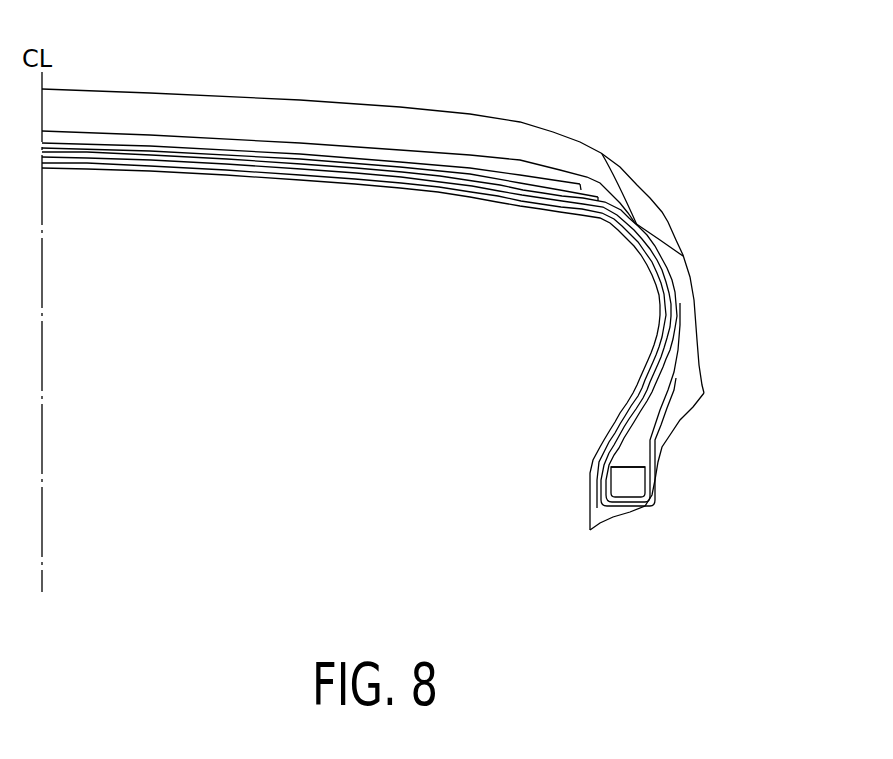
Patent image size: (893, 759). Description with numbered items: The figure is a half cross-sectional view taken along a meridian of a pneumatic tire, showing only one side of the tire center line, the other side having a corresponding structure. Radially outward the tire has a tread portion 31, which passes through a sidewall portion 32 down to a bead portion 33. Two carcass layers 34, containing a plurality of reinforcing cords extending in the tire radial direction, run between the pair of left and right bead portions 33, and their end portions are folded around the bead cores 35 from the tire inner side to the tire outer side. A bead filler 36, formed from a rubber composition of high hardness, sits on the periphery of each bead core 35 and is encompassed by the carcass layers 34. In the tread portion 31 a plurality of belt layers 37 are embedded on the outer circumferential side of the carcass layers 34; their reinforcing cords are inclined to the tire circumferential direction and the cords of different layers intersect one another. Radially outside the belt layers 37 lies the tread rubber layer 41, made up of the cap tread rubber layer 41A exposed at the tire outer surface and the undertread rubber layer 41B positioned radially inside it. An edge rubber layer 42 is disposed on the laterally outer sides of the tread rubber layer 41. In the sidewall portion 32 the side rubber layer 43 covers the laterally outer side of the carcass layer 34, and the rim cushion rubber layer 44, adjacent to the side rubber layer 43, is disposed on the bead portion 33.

The tread portion 31 is at (453, 108).
The tread rubber layer 41 is at (338, 121).
The cap tread rubber layer 41A is at (187, 108).
The undertread rubber layer 41B is at (233, 142).
The belt layers 37 is at (565, 188).
The edge rubber layer 42 is at (644, 216).
The carcass layers 34 is at (673, 292).
The sidewall portion 32 is at (702, 340).
The side rubber layer 43 is at (689, 391).
The bead filler 36 is at (623, 452).
The bead core 35 is at (618, 487).
The rim cushion rubber layer 44 is at (662, 445).
The bead portion 33 is at (629, 459).